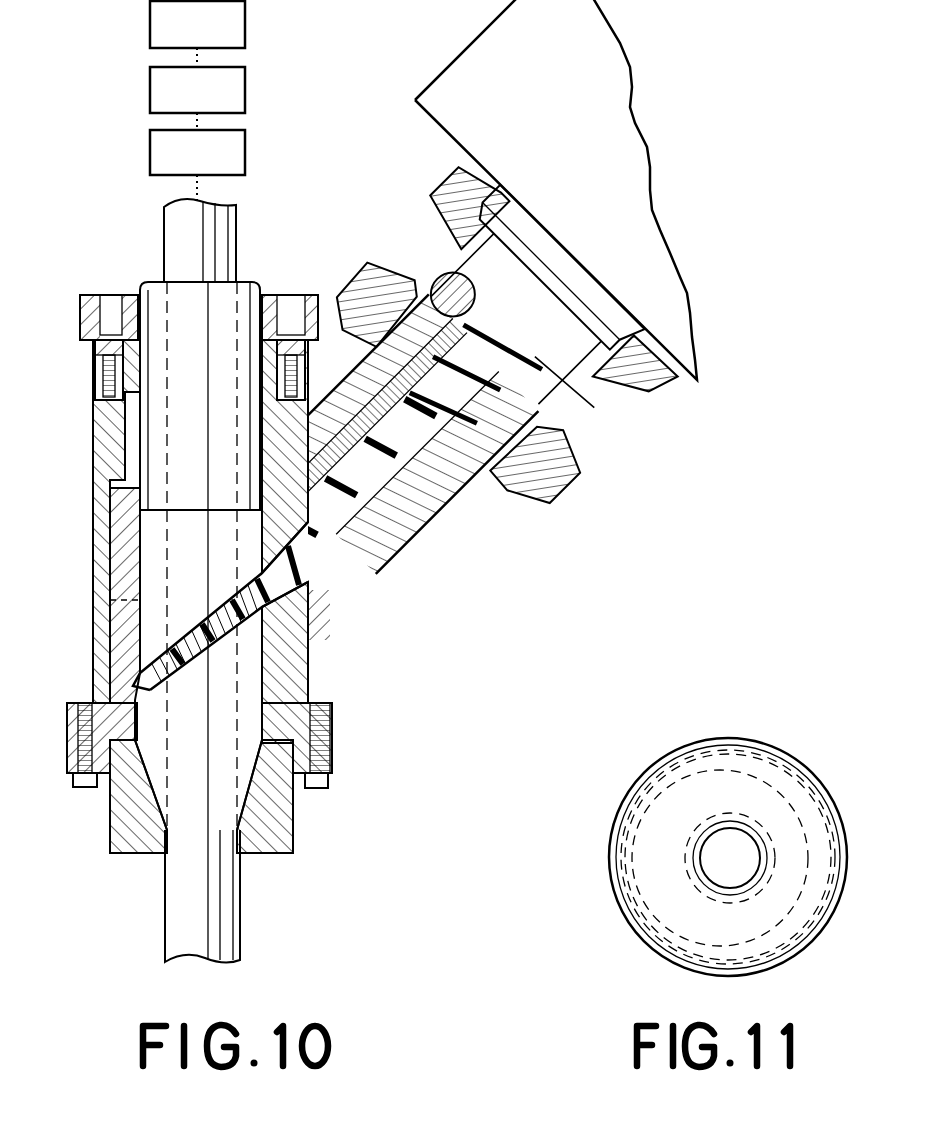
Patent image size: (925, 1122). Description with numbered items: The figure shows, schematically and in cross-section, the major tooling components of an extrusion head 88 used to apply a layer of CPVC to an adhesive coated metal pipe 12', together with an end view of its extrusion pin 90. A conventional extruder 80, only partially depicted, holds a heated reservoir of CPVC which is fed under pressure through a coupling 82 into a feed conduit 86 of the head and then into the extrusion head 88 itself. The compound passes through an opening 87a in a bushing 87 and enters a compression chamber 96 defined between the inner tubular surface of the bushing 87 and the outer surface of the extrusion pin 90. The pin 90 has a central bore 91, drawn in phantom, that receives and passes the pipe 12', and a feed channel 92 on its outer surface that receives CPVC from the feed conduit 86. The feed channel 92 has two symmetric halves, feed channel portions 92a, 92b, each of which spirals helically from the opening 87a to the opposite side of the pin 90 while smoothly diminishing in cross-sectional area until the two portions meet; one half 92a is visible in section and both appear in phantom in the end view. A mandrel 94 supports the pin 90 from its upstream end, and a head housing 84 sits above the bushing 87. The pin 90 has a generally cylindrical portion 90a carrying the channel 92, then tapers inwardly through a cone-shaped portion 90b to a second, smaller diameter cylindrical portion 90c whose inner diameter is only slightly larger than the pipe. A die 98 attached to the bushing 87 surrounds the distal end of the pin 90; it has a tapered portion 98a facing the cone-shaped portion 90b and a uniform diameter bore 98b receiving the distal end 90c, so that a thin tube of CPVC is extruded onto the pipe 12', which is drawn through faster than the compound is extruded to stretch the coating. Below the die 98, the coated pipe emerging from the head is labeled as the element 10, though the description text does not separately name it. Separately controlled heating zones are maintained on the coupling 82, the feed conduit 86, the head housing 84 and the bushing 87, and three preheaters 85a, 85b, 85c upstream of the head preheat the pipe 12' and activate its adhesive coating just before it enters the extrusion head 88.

In FIG. 10, the preheater 85a is at (228, 36).
In FIG. 10, the preheater 85b is at (228, 101).
In FIG. 10, the preheater 85c is at (228, 164).
In FIG. 10, the adhesive coated metal pipe 12' is at (235, 237).
In FIG. 10, the mandrel 94 is at (157, 306).
In FIG. 10, the head housing 84 is at (312, 293).
In FIG. 10, the extruder 80 is at (574, 150).
In FIG. 10, the coupling 82 is at (577, 390).
In FIG. 10, the feed conduit 86 is at (423, 530).
In FIG. 10, the bushing 87 is at (295, 701).
In FIG. 10, the opening 87a is at (307, 624).
In FIG. 10, the extrusion head 88 is at (334, 744).
In FIG. 10, the extrusion pin 90 is at (150, 568).
In FIG. 11, the extrusion pin 90 is at (610, 842).
In FIG. 10, the generally cylindrical portion 90a is at (226, 548).
In FIG. 10, the cone-shaped portion 90b is at (228, 790).
In FIG. 10, the second, smaller diameter cylindrical portion 90c is at (272, 830).
In FIG. 10, the central bore 91 is at (167, 612).
In FIG. 10, the feed channel 92 is at (202, 621).
In FIG. 11, the feed channel 92 is at (810, 852).
In FIG. 10, the feed channel portion 92a is at (198, 718).
In FIG. 11, the feed channel portion 92a is at (768, 940).
In FIG. 11, the feed channel portion 92b is at (752, 772).
In FIG. 10, the compression chamber 96 is at (133, 684).
In FIG. 10, the die 98 is at (273, 800).
In FIG. 10, the tapered portion 98a is at (150, 793).
In FIG. 10, the uniform diameter bore 98b is at (160, 832).
In FIG. 10, the outlet tube 10 is at (233, 895).